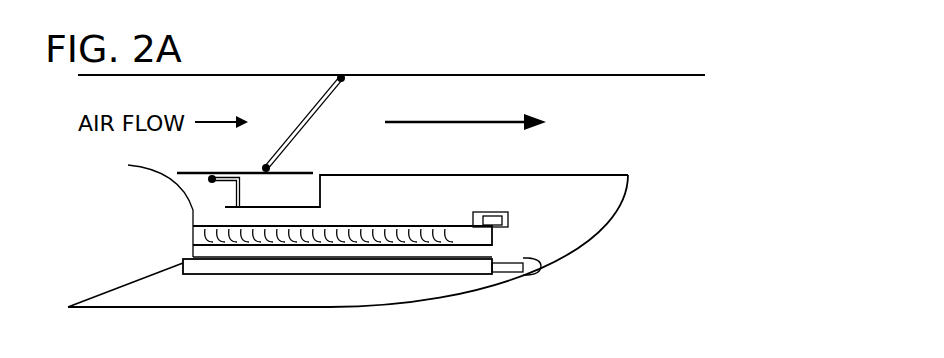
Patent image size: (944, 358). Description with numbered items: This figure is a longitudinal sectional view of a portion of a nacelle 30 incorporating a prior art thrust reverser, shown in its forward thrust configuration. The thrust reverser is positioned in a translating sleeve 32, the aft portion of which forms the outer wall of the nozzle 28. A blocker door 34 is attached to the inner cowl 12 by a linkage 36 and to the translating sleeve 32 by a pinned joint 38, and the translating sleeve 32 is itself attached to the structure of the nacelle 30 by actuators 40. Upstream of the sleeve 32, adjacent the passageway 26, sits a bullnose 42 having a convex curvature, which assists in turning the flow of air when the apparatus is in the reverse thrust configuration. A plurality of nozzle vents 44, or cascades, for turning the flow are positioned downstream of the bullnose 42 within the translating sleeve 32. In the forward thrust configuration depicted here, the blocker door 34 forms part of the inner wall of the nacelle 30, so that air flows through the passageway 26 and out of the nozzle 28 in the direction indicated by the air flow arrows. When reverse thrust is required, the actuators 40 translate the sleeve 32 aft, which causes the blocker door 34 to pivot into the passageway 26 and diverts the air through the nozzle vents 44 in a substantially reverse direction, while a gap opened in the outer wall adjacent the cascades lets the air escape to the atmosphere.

The inner cowl 12 is at (455, 73).
The passageway 26 is at (213, 97).
The nozzle 28 is at (588, 243).
The nacelle 30 is at (462, 303).
The translating sleeve 32 is at (535, 175).
The blocker door 34 is at (248, 170).
The linkage 36 is at (310, 110).
The pinned joint 38 is at (237, 192).
The actuators 40 is at (212, 268).
The bullnose 42 is at (127, 183).
The nozzle vents 44 is at (400, 236).